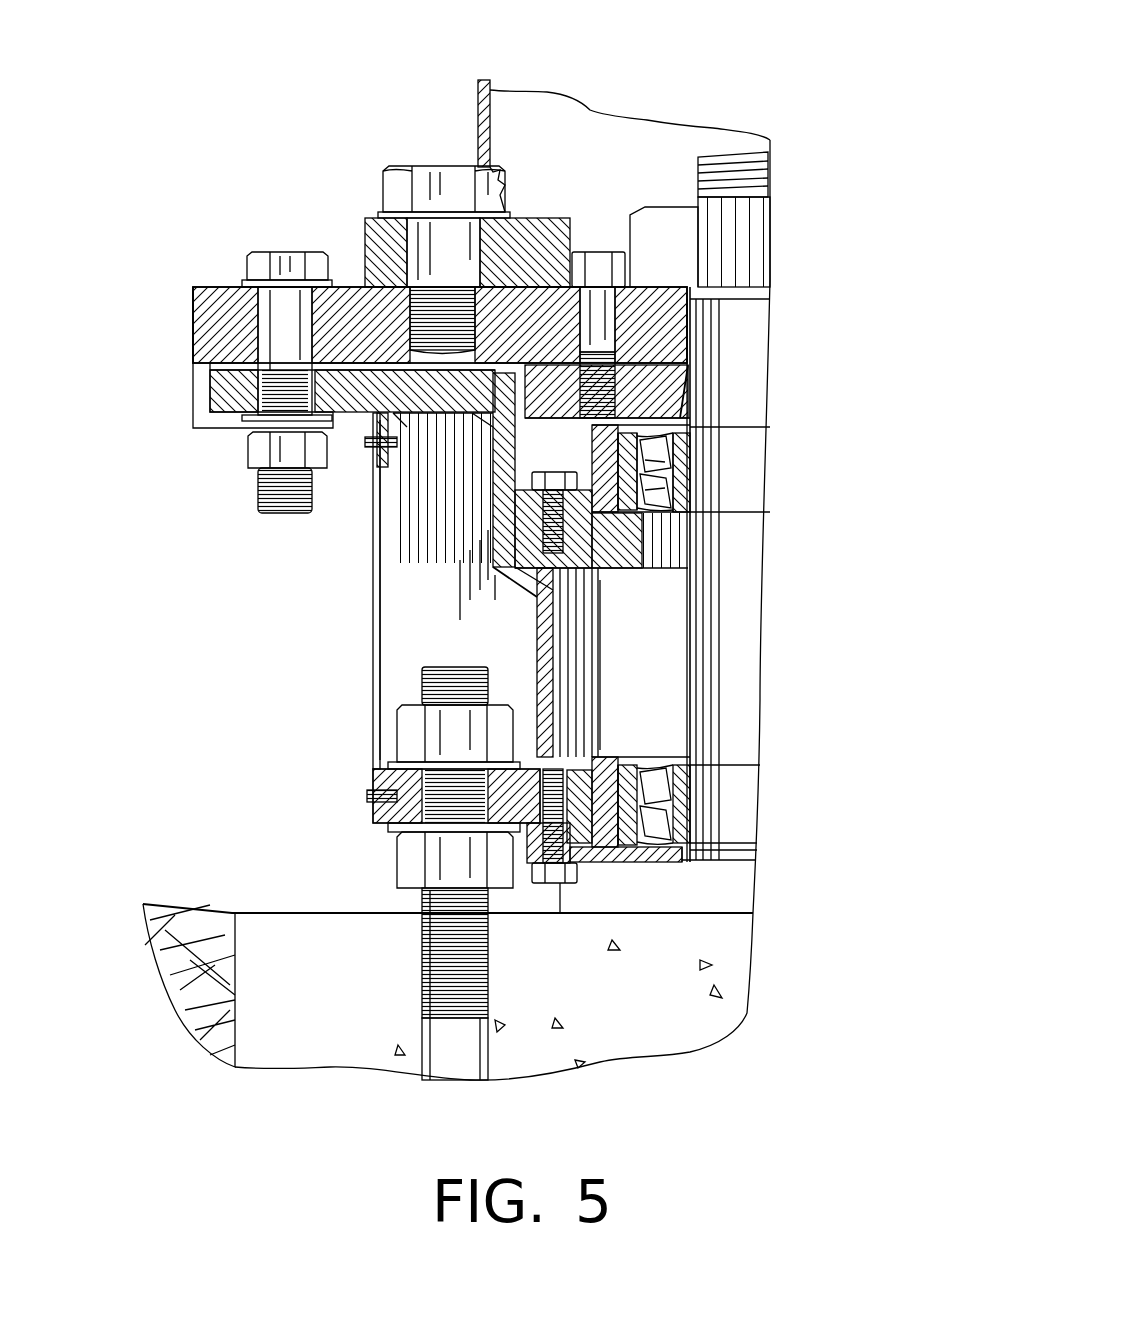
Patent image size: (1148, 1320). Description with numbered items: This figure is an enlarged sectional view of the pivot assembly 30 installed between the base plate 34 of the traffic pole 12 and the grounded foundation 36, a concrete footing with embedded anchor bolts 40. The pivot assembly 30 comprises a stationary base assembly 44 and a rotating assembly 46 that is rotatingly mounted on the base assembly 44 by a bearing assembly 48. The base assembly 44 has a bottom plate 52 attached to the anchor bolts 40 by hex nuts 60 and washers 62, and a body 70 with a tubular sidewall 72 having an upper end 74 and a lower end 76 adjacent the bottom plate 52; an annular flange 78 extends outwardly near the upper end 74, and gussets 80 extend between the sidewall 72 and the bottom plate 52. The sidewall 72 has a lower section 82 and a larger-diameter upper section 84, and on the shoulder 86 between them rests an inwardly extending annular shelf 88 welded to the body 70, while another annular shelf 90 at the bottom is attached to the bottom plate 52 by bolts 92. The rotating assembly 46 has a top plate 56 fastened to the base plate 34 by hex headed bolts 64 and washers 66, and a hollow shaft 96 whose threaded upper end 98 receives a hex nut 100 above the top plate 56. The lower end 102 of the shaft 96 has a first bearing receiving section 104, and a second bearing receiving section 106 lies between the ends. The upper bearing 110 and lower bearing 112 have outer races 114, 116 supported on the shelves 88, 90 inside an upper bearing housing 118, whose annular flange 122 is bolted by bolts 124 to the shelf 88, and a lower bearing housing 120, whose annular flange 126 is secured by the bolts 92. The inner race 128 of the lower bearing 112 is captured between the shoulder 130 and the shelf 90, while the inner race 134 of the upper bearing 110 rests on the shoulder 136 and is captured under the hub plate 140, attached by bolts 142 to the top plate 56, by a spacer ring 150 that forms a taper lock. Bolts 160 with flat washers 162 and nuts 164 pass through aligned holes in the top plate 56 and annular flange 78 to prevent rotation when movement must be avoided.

The pole 12 is at (480, 103).
The hex headed bolts 64 is at (430, 165).
The washers 66 is at (375, 208).
The base plate 34 is at (365, 222).
The rotating assembly 46 is at (190, 300).
The top plate 56 is at (215, 330).
The bolts 160 is at (262, 252).
The annular flange 78 is at (225, 385).
The flat washers 162 is at (245, 430).
The nuts 164 is at (258, 465).
The upper section 84 is at (495, 470).
The pivot assembly 30 is at (370, 688).
The base assembly 44 is at (370, 720).
The bolts 124 is at (497, 515).
The annular flange 122 is at (520, 548).
The annular shelf 88 is at (540, 562).
The shoulder 86 is at (560, 590).
The gussets 80 is at (423, 647).
The hex nuts 60 is at (413, 740).
The washers 62 is at (388, 765).
The bottom plate 52 is at (392, 810).
The anchor bolts 40 is at (450, 1060).
The foundation 36 is at (665, 1030).
The bolts 142 is at (600, 260).
The upper end 98 is at (738, 178).
The hex nut 100 is at (765, 240).
The shaft 96 is at (752, 310).
The upper end 74 is at (640, 362).
The hub plate 140 is at (655, 380).
The spacer ring 150 is at (680, 415).
The bearing assembly 48 is at (605, 447).
The outer race 114 is at (650, 445).
The upper bearing 110 is at (660, 480).
The second bearing receiving section 106 is at (740, 485).
The shoulder 136 is at (750, 512).
The inner race 134 is at (671, 522).
The upper bearing housing 118 is at (575, 560).
The lower section 82 is at (558, 597).
The body 70 is at (555, 628).
The tubular sidewall 72 is at (557, 650).
The lower end 76 is at (555, 700).
The lower bearing housing 120 is at (605, 752).
The outer race 116 is at (640, 765).
The lower bearing 112 is at (688, 756).
The annular shelf 90 is at (645, 862).
The shoulder 130 is at (740, 770).
The first bearing receiving section 104 is at (740, 797).
The lower end 102 is at (743, 827).
The inner race 128 is at (688, 832).
The annular flange 126 is at (580, 880).
The bolts 92 is at (578, 913).